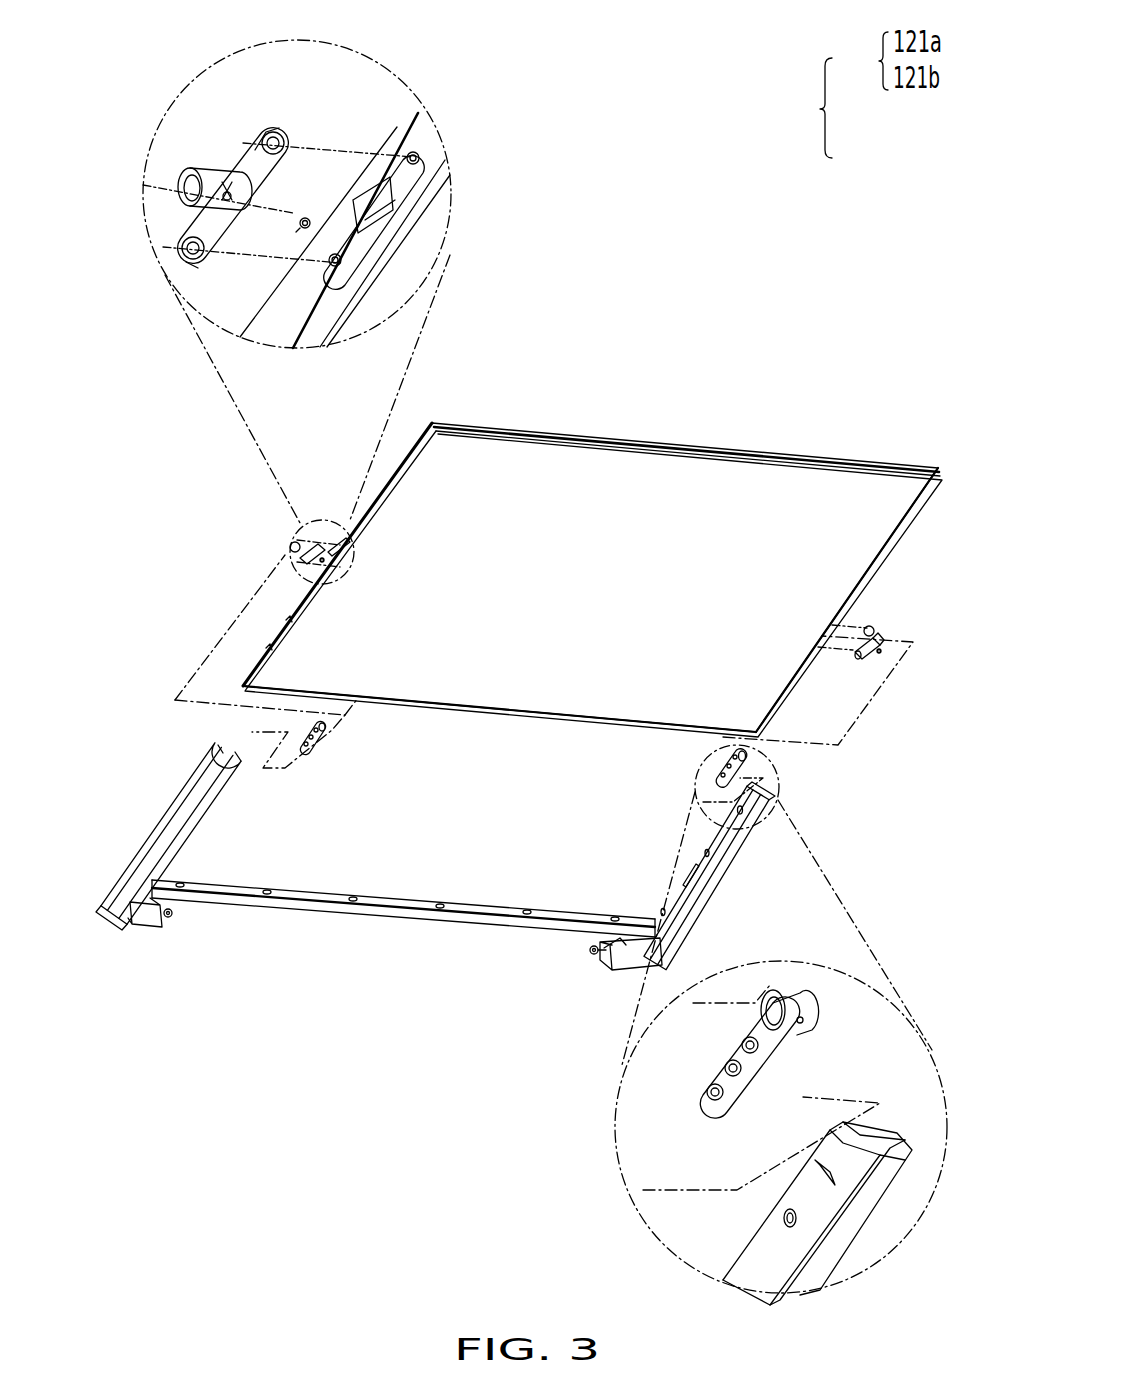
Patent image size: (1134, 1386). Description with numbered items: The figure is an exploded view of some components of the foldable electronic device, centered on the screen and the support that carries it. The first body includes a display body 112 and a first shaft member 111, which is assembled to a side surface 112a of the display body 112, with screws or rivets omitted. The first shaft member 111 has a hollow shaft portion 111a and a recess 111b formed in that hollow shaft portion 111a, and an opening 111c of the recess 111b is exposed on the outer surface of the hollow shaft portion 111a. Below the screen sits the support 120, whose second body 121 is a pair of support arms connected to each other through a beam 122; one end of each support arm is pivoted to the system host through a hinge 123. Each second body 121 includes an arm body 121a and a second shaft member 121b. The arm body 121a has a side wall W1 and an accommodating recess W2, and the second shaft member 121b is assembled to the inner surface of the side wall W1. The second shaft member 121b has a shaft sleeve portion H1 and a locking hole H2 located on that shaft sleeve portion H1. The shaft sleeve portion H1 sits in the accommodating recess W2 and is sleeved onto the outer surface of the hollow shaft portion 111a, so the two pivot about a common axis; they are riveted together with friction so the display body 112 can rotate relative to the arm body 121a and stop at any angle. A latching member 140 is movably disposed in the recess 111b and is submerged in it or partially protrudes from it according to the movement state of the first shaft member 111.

The first shaft member 111 is at (222, 108).
The hollow shaft portion 111a is at (212, 162).
The recess 111b is at (198, 246).
The opening 111c is at (185, 182).
The display body 112 is at (683, 443).
The side surface 112a is at (420, 128).
The support 120 is at (542, 682).
The second body 121 is at (541, 682).
The arm body 121a is at (168, 823).
The second shaft member 121b is at (320, 740).
The beam 122 is at (395, 886).
The hinge 123 is at (173, 920).
The latching member 140 is at (303, 226).
The shaft sleeve portion H1 is at (799, 993).
The locking hole H2 is at (812, 1020).
The side wall W1 is at (747, 1273).
The accommodating recess W2 is at (848, 1160).